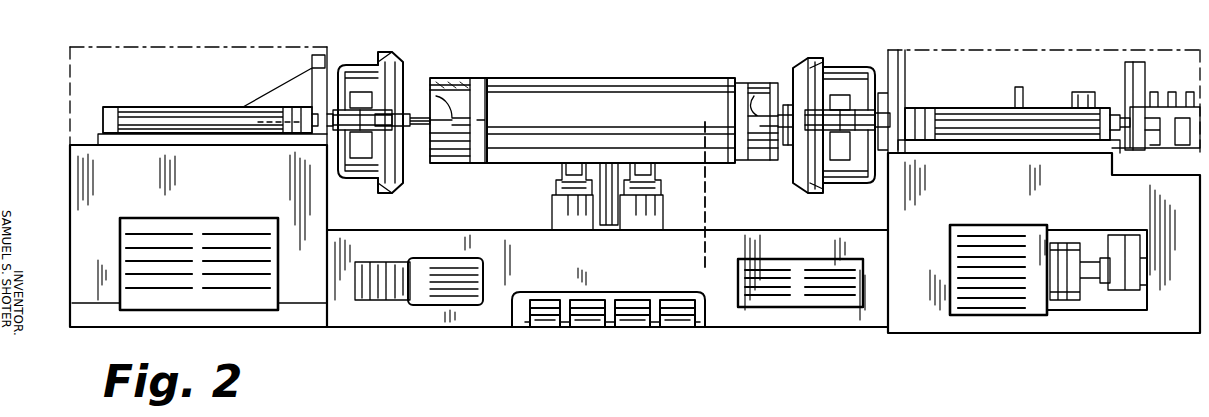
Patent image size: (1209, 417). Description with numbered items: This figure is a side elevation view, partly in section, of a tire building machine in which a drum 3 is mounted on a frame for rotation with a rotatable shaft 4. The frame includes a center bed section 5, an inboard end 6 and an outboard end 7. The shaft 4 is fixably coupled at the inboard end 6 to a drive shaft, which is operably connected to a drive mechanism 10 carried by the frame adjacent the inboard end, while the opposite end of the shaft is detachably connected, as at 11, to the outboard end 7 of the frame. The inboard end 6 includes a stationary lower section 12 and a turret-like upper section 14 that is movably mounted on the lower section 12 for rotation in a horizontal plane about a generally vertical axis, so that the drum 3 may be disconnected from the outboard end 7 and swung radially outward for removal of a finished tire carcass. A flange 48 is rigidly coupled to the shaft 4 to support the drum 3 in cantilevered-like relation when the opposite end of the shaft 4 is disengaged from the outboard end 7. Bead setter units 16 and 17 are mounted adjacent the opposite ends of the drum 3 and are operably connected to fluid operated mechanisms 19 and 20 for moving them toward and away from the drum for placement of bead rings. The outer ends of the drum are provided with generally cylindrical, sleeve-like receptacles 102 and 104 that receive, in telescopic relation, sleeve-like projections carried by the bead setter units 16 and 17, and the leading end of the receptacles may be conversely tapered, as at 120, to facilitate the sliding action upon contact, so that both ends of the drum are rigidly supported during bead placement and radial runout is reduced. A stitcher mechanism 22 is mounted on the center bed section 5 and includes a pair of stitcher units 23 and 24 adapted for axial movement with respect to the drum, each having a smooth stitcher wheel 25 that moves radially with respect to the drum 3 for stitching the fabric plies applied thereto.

The outboard end 7 is at (68, 75).
The fluid operated mechanism 19 is at (169, 105).
The bead setter unit 16 is at (355, 64).
The detachable connection 11 is at (416, 112).
The tapered leading end 120 is at (438, 112).
The sleeve-like receptacle 102 is at (444, 96).
The drum 3 is at (558, 76).
The sleeve-like receptacle 104 is at (758, 84).
The flange 48 is at (788, 104).
The bead setter unit 17 is at (855, 66).
The turret-like upper section 14 is at (968, 68).
The fluid operated mechanism 20 is at (1038, 106).
The inboard end 6 is at (1155, 50).
The rotatable shaft 4 is at (258, 122).
The drive mechanism 10 is at (705, 122).
The stitcher mechanism 22 is at (596, 215).
The stitcher unit 23 is at (582, 230).
The stitcher unit 24 is at (648, 230).
The smooth stitcher wheel 25 is at (610, 226).
The center bed section 5 is at (722, 318).
The stationary lower section 12 is at (1163, 312).